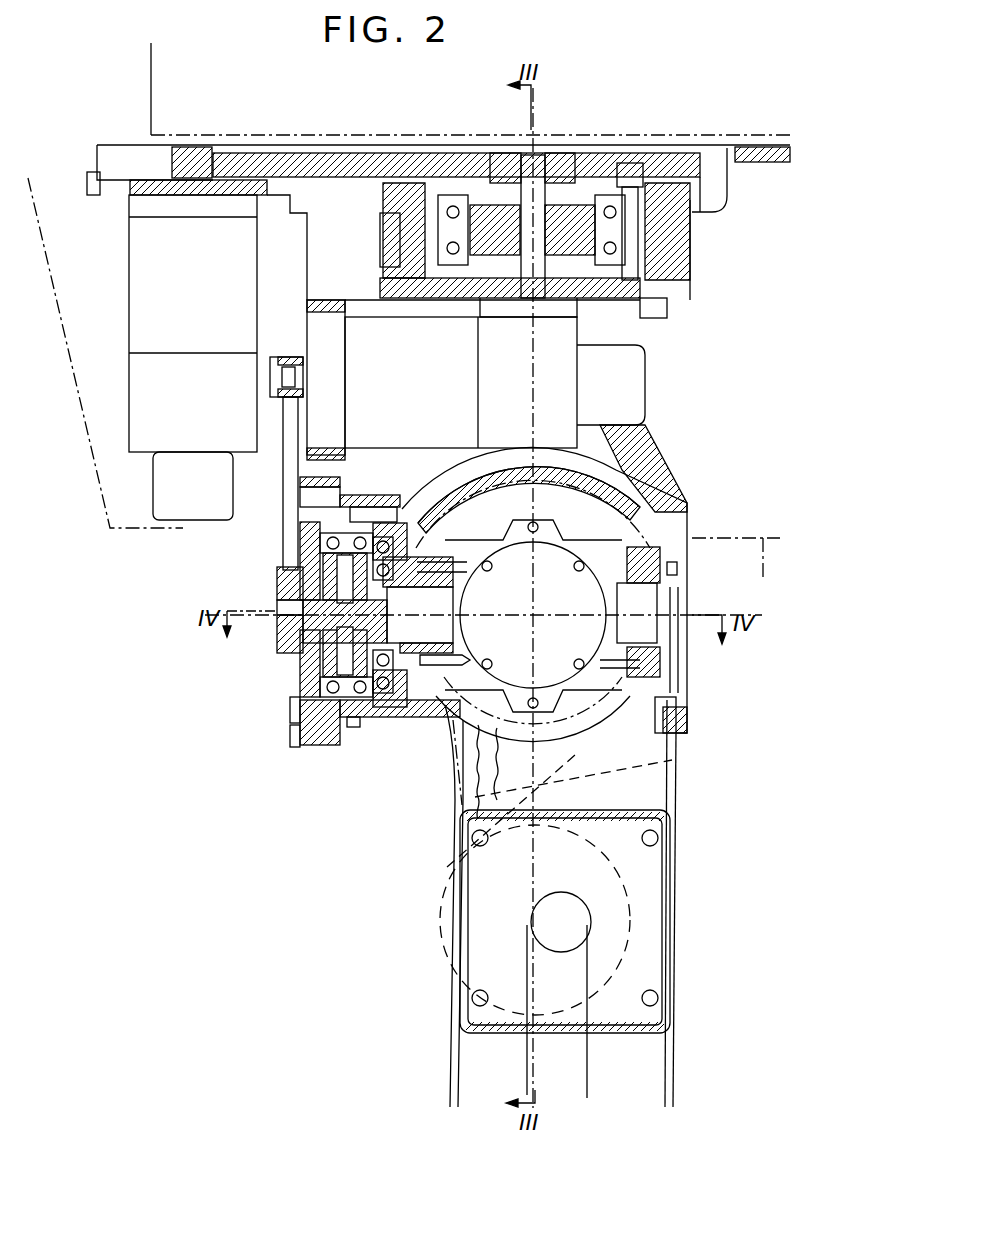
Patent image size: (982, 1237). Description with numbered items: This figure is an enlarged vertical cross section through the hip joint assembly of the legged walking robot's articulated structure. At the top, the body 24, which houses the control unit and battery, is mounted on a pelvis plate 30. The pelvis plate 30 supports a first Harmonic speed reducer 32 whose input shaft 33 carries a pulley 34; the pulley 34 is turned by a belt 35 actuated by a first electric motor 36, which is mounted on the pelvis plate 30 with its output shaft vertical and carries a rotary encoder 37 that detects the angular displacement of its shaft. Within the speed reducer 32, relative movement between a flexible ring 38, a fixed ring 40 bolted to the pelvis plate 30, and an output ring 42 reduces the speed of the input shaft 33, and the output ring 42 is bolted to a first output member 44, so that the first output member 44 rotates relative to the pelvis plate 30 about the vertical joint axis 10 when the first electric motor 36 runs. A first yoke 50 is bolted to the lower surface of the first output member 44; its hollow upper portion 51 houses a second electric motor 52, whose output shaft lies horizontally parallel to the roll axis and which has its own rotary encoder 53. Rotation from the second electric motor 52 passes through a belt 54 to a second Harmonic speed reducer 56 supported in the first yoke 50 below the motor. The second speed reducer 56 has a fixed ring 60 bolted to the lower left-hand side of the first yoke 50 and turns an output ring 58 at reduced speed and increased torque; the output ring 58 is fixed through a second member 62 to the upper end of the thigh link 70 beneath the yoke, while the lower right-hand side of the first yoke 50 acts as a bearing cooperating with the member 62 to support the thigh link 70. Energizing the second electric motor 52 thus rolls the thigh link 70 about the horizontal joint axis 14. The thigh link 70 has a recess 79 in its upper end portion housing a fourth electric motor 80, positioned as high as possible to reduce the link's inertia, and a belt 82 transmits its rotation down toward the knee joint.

The joint axis 10 is at (533, 125).
The joint axis 14 is at (267, 617).
The body 24 is at (151, 70).
The pelvis plate 30 is at (735, 195).
The first Harmonic speed reducer 32 is at (570, 235).
The input shaft 33 is at (573, 163).
The pulley 34 is at (562, 157).
The belt 35 is at (372, 165).
The first electric motor 36 is at (138, 287).
The rotary encoder 37 is at (160, 490).
The flexible ring 38 is at (528, 165).
The fixed ring 40 is at (483, 185).
The output ring 42 is at (447, 192).
The first output member 44 is at (370, 268).
The first yoke 50 is at (330, 295).
The hollow upper portion 51 is at (372, 300).
The second electric motor 52 is at (360, 348).
The rotary encoder 53 is at (623, 410).
The belt 54 is at (295, 490).
The second Harmonic speed reducer 56 is at (308, 660).
The output ring 58 is at (300, 530).
The fixed ring 60 is at (322, 500).
The second member 62 is at (388, 722).
The thigh link 70 is at (458, 900).
The recess 79 is at (632, 838).
The fourth electric motor 80 is at (627, 907).
The belt 82 is at (587, 1083).